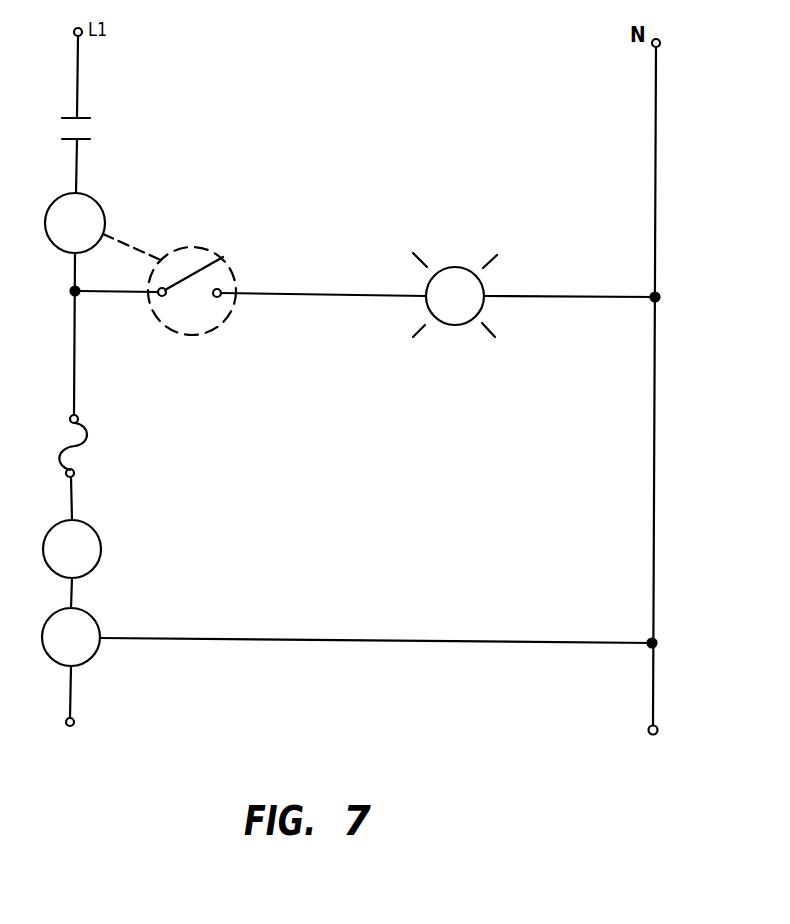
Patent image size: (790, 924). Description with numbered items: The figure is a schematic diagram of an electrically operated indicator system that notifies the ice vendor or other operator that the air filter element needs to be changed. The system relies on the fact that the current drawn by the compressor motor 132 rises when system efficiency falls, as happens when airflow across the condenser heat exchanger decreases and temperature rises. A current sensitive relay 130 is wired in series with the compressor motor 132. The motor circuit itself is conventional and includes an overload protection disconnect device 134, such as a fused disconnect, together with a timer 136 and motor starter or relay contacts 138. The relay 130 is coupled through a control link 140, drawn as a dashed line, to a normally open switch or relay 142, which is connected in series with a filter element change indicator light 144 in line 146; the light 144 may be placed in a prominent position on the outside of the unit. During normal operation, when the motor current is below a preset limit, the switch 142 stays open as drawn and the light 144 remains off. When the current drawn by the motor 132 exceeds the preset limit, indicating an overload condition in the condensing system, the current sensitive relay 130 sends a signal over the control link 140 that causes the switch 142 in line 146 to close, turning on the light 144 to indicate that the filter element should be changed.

The current sensitive relay 130 is at (93, 205).
The compressor motor 132 is at (92, 613).
The overload protection disconnect device 134 is at (86, 440).
The timer 136 is at (100, 542).
The motor starter or relay contacts 138 is at (80, 138).
The control link 140 is at (128, 242).
The normally open switch or relay 142 is at (197, 272).
The filter element change indicator light 144 is at (457, 267).
The line 146 is at (580, 295).